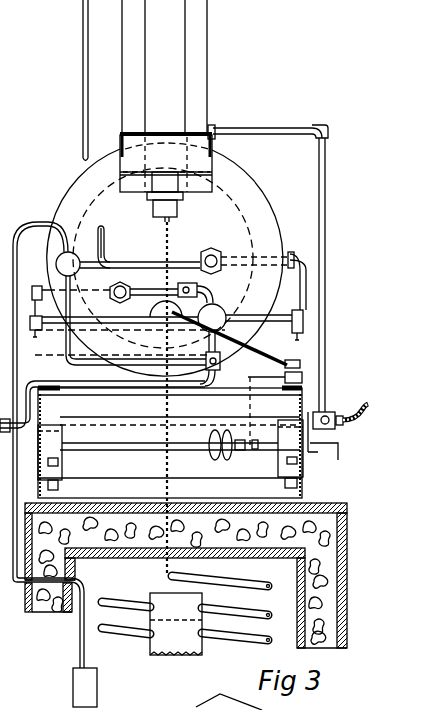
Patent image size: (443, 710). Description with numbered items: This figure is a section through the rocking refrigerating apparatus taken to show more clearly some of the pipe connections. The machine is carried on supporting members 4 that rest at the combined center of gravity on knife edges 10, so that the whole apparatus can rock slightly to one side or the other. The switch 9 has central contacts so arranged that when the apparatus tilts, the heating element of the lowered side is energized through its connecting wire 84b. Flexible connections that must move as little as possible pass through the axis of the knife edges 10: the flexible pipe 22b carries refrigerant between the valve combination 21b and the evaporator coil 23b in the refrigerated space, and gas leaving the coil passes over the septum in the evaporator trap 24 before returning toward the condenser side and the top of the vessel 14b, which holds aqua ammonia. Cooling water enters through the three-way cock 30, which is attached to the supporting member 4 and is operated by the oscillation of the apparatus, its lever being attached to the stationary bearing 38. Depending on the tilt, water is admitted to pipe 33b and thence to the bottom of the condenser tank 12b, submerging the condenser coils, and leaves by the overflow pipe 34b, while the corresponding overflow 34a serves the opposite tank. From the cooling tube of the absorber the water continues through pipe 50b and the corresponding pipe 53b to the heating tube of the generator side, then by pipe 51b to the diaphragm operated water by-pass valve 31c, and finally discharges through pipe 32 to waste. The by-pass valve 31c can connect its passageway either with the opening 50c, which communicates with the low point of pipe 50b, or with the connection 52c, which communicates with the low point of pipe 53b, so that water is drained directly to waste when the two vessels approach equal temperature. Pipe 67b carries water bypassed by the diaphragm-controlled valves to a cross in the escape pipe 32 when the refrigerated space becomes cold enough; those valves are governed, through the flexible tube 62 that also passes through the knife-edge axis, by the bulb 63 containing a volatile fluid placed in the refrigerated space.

The supporting member 4 is at (44, 398).
The switch 9 is at (303, 376).
The knife edges 10 is at (63, 431).
The condenser tank 12b is at (207, 46).
The vessel 14b is at (186, 92).
The valve combination 21b is at (179, 212).
The flexible pipe 22b is at (169, 252).
The evaporator coil 23b is at (226, 579).
The evaporator trap 24 is at (203, 660).
The three-way cock 30 is at (322, 413).
The diaphragm operated water by-pass valve 31c is at (222, 306).
The escape pipe 32 is at (48, 387).
The pipe 33b is at (326, 278).
The overflow pipe 34a is at (104, 240).
The overflow pipe 34b is at (83, 92).
The bearing 38 is at (62, 460).
The pipe 50b is at (306, 305).
The drain opening 50c is at (250, 317).
The pipe 51b is at (130, 289).
The connection 52c is at (77, 323).
The pipe 53b is at (35, 304).
The flexible tube 62 is at (8, 366).
The bulb 63 is at (97, 690).
The pipe 67b is at (118, 365).
The connecting wire 84b is at (255, 358).